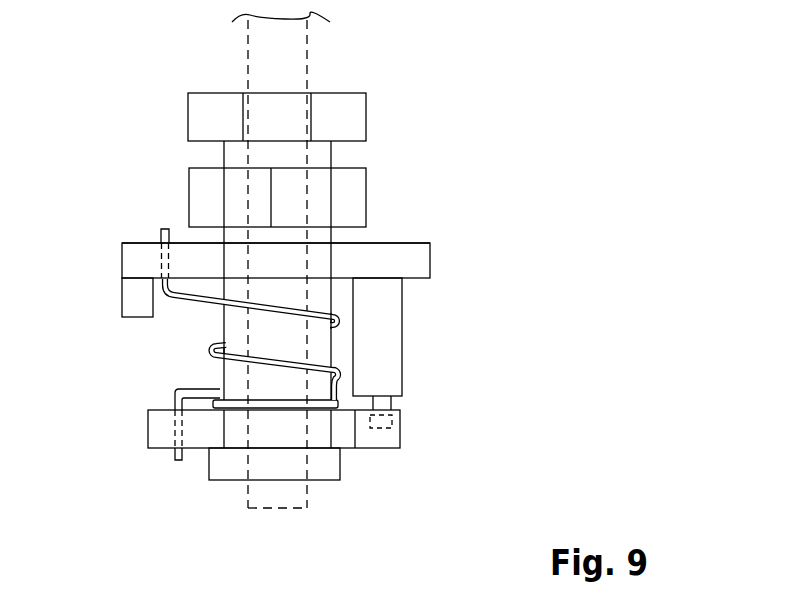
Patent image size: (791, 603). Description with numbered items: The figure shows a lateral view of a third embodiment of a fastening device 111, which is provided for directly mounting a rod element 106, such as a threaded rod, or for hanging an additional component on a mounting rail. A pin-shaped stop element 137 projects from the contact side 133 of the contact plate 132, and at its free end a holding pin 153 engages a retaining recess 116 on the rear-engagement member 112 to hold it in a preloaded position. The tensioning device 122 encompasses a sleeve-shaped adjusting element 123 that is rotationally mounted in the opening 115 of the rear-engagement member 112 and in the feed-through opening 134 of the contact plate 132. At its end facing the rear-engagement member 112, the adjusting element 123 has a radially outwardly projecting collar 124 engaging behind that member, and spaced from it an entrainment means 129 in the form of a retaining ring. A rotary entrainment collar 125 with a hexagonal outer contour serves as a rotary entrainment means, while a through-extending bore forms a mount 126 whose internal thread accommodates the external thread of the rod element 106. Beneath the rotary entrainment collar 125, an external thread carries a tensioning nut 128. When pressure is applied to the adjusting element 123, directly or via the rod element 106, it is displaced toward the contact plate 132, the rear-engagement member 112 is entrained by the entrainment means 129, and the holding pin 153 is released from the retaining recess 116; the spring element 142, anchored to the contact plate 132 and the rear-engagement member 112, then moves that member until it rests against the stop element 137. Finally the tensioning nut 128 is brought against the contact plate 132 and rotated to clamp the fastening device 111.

The rod element 106 is at (292, 50).
The rotary entrainment collar 125 is at (347, 113).
The tensioning nut 128 is at (207, 193).
The spring element 142 is at (200, 303).
The adjusting element 123 is at (233, 331).
The entrainment means 129 is at (258, 403).
The radially outwardly projecting collar 124 is at (234, 465).
The opening 115 is at (317, 460).
The fastening device 111 is at (568, 161).
The tensioning device 122 is at (396, 195).
The feed-through opening 134 is at (430, 204).
The contact plate 132 is at (398, 257).
The contact side 133 is at (410, 288).
The stop element 137 is at (390, 318).
The mount 126 is at (362, 361).
The holding pin 153 is at (388, 402).
The retaining recess 116 is at (402, 423).
The rear-engagement member 112 is at (380, 437).